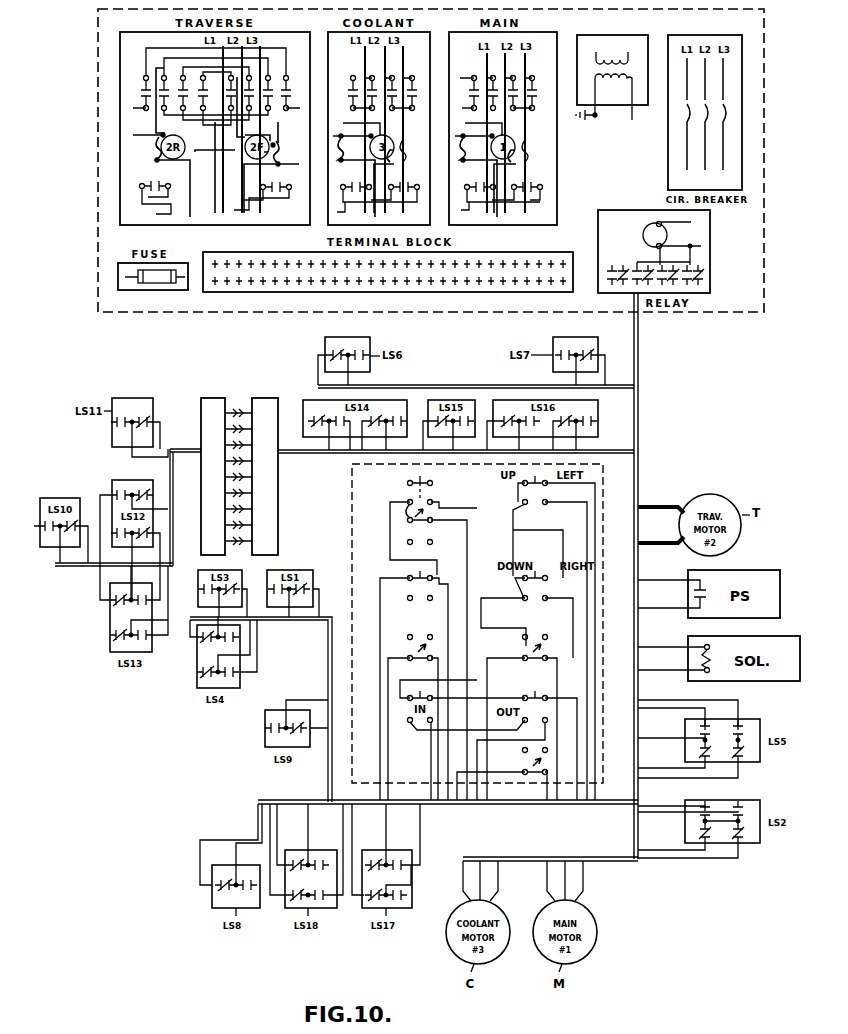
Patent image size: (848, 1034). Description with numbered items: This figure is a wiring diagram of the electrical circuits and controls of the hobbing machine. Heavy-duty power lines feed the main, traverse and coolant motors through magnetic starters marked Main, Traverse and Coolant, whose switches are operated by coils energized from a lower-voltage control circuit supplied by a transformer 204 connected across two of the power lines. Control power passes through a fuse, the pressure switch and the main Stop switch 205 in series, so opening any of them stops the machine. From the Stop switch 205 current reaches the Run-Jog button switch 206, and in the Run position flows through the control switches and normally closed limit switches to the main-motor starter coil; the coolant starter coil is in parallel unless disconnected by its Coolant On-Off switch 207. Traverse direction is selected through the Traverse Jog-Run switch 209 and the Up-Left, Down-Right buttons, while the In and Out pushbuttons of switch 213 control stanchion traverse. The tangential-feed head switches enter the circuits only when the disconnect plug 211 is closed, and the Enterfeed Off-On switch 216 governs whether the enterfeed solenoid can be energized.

The transformer 204 is at (612, 89).
The main Stop switch 205 is at (414, 685).
The Run-Jog button switch 206 is at (428, 638).
The Coolant On-Off switch 207 is at (410, 718).
The Traverse Jog-Run switch 209 is at (522, 716).
The disconnect plug 211 is at (241, 465).
The In-Out pushbutton switch 213 is at (478, 740).
The Enterfeed Off-On switch 216 is at (502, 774).